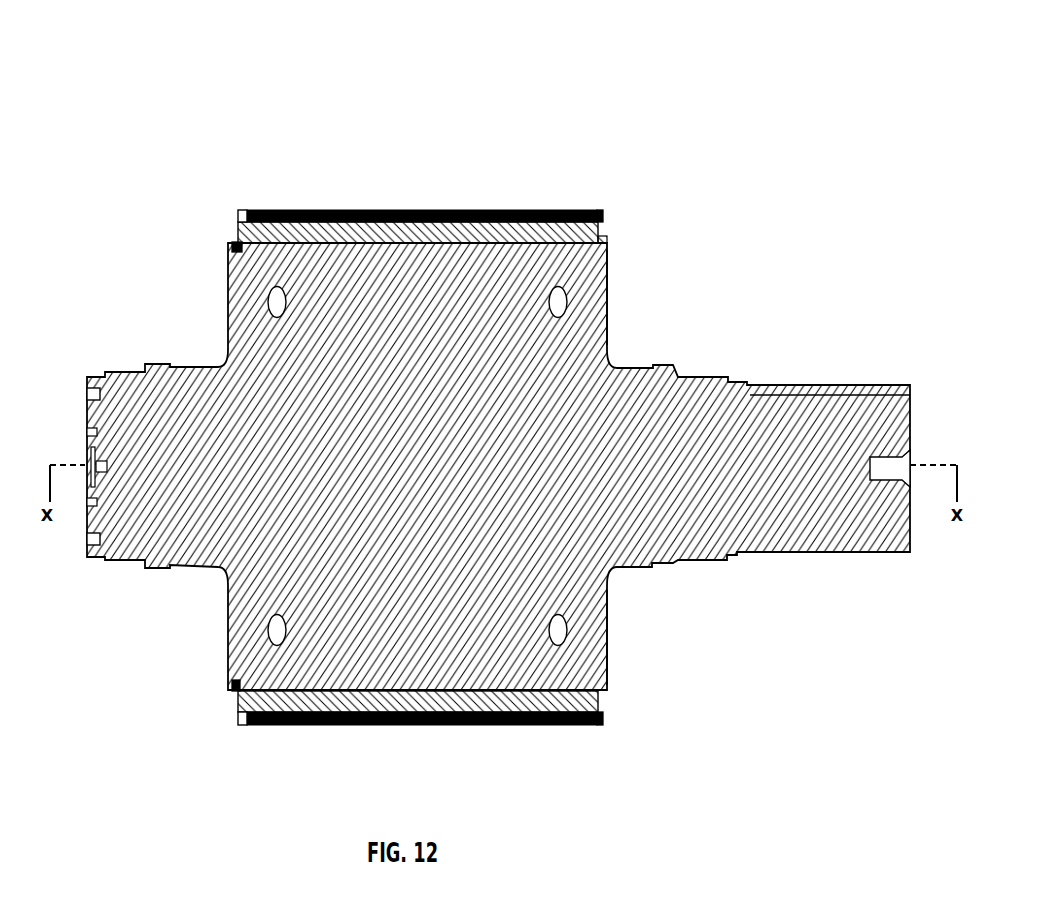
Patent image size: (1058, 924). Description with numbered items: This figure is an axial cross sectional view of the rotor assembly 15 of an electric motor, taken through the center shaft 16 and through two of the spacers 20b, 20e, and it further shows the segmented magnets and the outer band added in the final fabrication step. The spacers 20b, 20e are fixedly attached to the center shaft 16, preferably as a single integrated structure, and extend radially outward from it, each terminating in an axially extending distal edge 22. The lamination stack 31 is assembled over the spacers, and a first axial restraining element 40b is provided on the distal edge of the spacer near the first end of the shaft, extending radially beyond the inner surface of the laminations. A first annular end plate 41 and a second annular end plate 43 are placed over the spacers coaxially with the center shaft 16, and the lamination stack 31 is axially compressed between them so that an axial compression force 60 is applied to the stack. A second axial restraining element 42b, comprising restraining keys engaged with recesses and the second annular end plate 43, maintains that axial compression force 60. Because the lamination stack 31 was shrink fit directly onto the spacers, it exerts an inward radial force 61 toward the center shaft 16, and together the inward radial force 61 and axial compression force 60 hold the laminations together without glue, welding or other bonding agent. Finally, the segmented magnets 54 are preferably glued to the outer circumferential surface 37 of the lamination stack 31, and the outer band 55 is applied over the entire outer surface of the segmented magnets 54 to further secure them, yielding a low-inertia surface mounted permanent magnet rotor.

The rotor assembly 15 is at (626, 80).
The center shaft 16 is at (683, 523).
The spacer 20b is at (603, 318).
The spacer 20e is at (608, 635).
The axially extending distal edge 22 is at (457, 243).
The lamination stack 31 is at (492, 236).
The outer circumferential surface 37 is at (538, 222).
The first axial restraining element 40b is at (607, 240).
The first annular end plate 41 is at (603, 238).
The second axial restraining element 42b is at (234, 242).
The second annular end plate 43 is at (238, 210).
The segmented magnets 54 is at (432, 210).
The outer band 55 is at (312, 210).
The axial compression force 60 is at (285, 742).
The inward radial force 61 is at (257, 243).